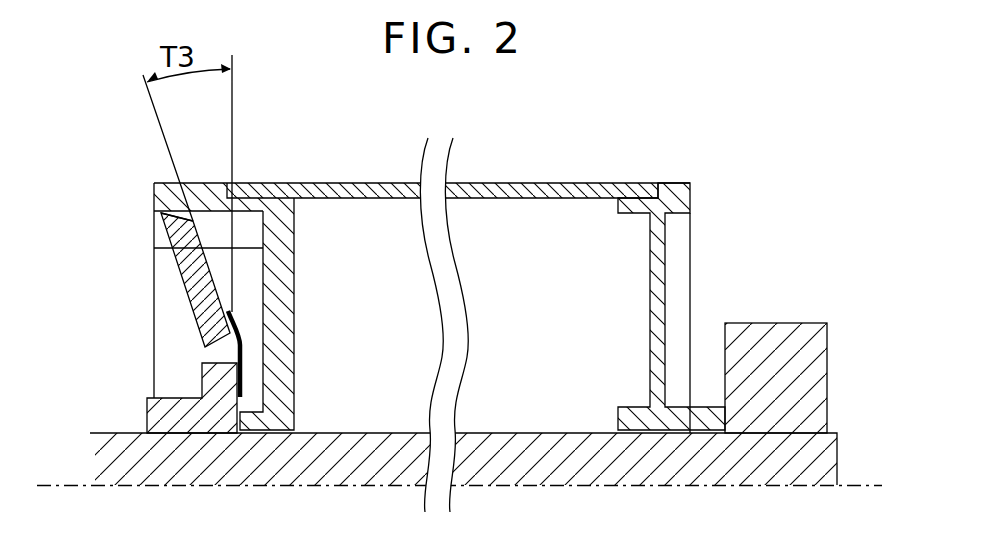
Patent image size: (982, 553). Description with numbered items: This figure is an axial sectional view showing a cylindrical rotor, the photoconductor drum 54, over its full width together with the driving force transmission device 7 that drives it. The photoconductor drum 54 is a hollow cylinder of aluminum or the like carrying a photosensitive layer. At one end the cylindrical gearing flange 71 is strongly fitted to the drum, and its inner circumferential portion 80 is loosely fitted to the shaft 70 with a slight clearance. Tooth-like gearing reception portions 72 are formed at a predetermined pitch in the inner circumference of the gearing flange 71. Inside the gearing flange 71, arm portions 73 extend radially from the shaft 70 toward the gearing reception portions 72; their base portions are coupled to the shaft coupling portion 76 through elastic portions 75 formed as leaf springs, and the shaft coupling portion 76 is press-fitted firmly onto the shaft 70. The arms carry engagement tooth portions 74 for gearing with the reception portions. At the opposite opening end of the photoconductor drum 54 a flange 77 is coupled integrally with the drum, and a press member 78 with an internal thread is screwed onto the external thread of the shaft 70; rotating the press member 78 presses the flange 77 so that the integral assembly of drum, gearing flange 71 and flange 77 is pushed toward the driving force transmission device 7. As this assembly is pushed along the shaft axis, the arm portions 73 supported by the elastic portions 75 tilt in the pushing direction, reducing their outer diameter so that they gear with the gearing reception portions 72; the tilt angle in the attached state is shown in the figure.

The driving force transmission device 7 is at (85, 97).
The gearing flange 71 is at (173, 197).
The gearing reception portions 72 is at (214, 220).
The arm portions 73 is at (200, 283).
The engagement tooth portions 74 is at (170, 224).
The elastic portions 75 is at (237, 355).
The shaft coupling portion 76 is at (183, 402).
The photoconductor drum 54 is at (545, 182).
The shaft 70 is at (523, 432).
The flange 77 is at (672, 190).
The press member 78 is at (762, 335).
The inner circumferential portion 80 is at (282, 393).